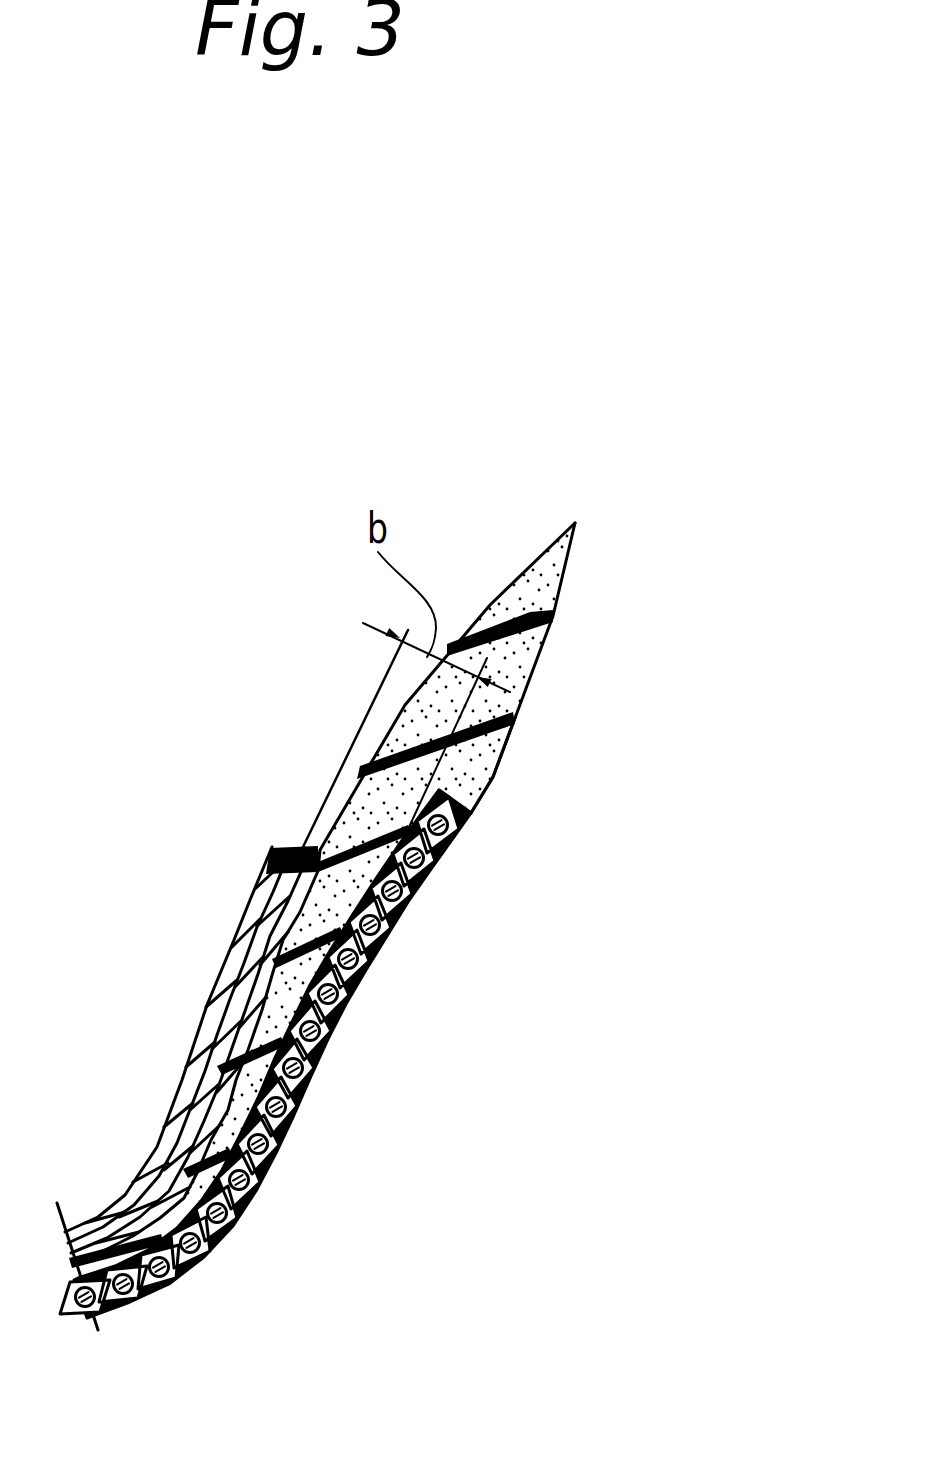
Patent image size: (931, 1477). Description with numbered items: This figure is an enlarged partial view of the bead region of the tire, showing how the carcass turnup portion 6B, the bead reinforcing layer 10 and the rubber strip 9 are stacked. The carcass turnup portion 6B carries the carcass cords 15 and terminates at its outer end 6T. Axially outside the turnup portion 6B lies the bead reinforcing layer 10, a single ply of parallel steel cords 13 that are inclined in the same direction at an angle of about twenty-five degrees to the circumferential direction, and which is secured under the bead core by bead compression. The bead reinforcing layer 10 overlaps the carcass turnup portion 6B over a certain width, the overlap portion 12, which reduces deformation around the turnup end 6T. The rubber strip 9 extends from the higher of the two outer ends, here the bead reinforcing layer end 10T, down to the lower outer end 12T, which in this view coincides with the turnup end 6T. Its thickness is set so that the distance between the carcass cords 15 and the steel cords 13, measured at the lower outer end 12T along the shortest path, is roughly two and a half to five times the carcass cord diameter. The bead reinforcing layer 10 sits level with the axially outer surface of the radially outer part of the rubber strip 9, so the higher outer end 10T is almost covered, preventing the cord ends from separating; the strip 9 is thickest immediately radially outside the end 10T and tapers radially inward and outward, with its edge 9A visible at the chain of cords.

The outer end of the carcass turnup portion 6T is at (299, 836).
The carcass turnup portion 6B is at (203, 1005).
The lower outer end 12T is at (235, 716).
The rubber strip 9 is at (297, 912).
The edge of layer 9 9A is at (477, 805).
The bead reinforcing layer 10 is at (432, 870).
The bead reinforcing layer end 10T is at (614, 778).
The overlap portion 12 is at (425, 1031).
The steel cords 13 is at (455, 840).
The carcass cords 15 is at (271, 849).